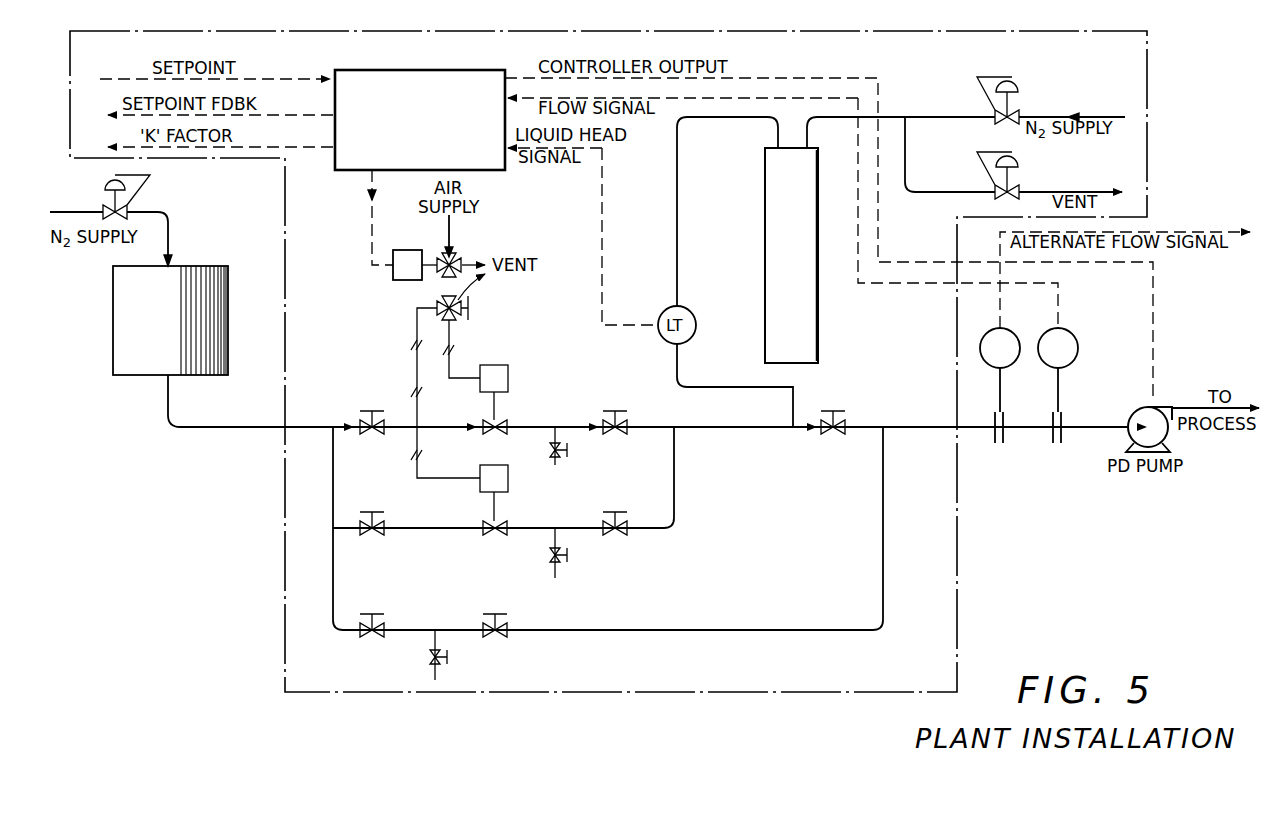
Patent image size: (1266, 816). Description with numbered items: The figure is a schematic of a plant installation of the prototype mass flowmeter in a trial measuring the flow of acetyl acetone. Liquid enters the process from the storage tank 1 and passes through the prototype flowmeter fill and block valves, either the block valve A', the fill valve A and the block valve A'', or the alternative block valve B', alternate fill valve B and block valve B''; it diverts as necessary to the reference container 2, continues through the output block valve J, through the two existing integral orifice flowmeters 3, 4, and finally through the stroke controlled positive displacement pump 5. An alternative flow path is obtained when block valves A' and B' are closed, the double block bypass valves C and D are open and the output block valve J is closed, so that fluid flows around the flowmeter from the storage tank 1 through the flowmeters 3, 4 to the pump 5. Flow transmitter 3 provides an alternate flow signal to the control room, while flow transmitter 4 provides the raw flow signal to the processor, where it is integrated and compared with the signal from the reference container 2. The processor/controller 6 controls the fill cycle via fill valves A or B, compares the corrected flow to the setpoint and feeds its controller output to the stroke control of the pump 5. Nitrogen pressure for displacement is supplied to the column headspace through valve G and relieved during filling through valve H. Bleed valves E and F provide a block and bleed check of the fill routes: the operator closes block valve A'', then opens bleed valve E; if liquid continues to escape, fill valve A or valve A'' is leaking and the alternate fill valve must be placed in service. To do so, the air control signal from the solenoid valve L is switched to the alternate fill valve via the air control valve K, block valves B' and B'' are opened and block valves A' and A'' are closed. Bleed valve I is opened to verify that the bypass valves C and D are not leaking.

The storage tank 1 is at (200, 266).
The reference container 2 is at (765, 226).
The integral flowmeter 3 is at (1000, 455).
The integral flowmeter 4 is at (1058, 455).
The stroke controlled positive displacement pump 5 is at (1160, 408).
The processor/controller 6 is at (420, 80).
The fill valve A is at (479, 414).
The block valve A' is at (362, 440).
The block valve A'' is at (628, 442).
The alternate fill valve B is at (486, 519).
The block valve B' is at (385, 542).
The block valve B'' is at (630, 542).
The bypass valve C is at (372, 645).
The bypass valve D is at (495, 645).
The bleed valve E is at (556, 463).
The bleed valve F is at (558, 568).
The valve G is at (1013, 110).
The valve H is at (1013, 185).
The bleed valve I is at (440, 668).
The output block valve J is at (833, 440).
The air control valve K is at (471, 313).
The solenoid valve L is at (400, 280).